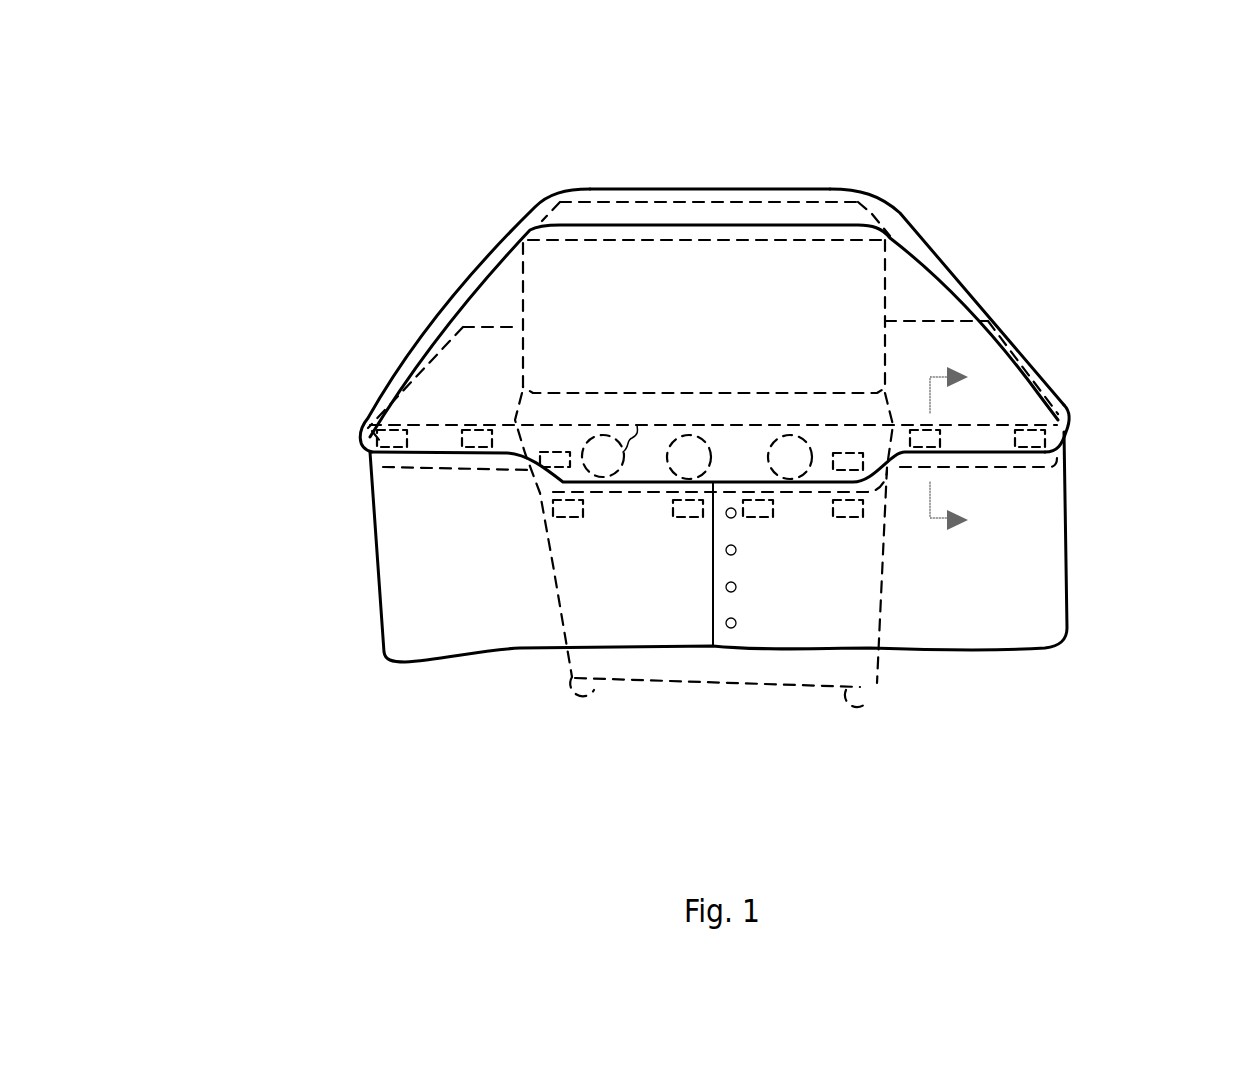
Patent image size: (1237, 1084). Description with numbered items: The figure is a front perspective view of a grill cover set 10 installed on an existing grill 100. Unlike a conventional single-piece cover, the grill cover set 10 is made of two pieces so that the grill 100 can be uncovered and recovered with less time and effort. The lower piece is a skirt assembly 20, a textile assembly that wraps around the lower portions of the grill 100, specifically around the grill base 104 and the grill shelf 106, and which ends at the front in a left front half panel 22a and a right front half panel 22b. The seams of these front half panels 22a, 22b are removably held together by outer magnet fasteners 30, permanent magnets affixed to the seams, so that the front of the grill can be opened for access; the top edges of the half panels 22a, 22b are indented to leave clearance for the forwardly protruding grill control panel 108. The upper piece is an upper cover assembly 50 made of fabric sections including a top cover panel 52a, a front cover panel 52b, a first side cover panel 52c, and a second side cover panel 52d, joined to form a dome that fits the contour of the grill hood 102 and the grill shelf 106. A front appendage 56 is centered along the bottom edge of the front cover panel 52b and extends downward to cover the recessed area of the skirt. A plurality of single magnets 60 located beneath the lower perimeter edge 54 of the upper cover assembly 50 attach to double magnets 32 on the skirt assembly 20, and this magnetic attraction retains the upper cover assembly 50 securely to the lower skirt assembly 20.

The grill cover set 10 is at (268, 267).
The lower skirt assembly 20 is at (1065, 515).
The left front half panel 22a is at (635, 623).
The right front half panel 22b is at (925, 615).
The outer magnet fasteners 30 is at (726, 624).
The double magnets 32 is at (683, 523).
The upper cover assembly 50 is at (1027, 337).
The top cover panel 52a is at (787, 184).
The front cover panel 52b is at (785, 283).
The first side cover panel 52c is at (455, 292).
The second side cover panel 52d is at (903, 217).
The lower perimeter edge 54 is at (1071, 416).
The front appendage 56 is at (667, 483).
The single magnets 60 is at (462, 450).
The grill 100 is at (885, 288).
The grill hood 102 is at (523, 288).
The grill base 104 is at (552, 557).
The grill shelf 106 is at (465, 468).
The grill control panel 108 is at (623, 452).